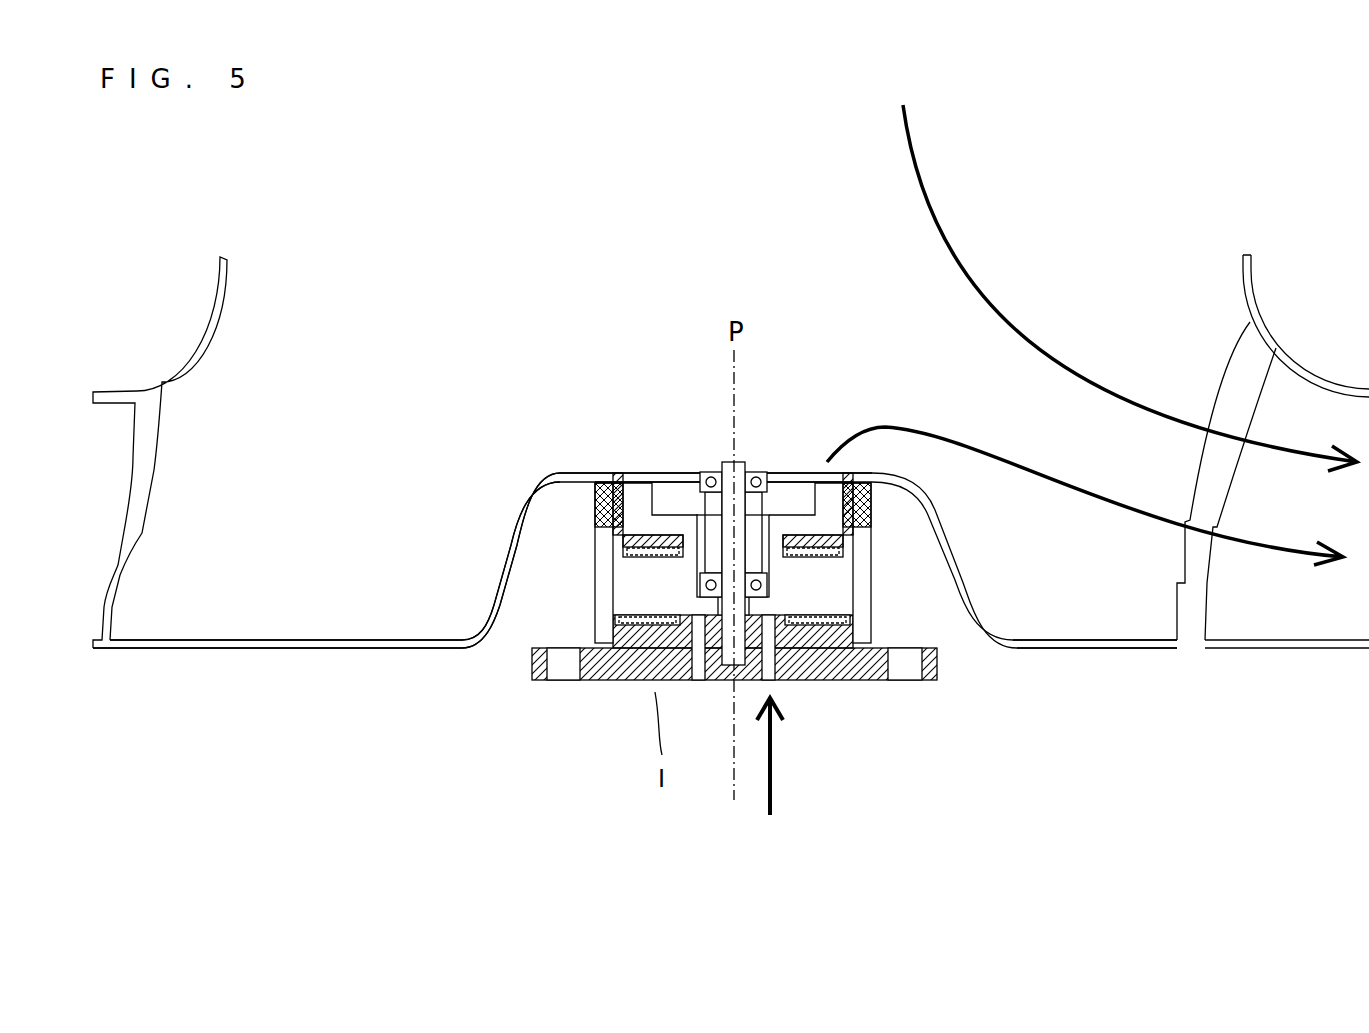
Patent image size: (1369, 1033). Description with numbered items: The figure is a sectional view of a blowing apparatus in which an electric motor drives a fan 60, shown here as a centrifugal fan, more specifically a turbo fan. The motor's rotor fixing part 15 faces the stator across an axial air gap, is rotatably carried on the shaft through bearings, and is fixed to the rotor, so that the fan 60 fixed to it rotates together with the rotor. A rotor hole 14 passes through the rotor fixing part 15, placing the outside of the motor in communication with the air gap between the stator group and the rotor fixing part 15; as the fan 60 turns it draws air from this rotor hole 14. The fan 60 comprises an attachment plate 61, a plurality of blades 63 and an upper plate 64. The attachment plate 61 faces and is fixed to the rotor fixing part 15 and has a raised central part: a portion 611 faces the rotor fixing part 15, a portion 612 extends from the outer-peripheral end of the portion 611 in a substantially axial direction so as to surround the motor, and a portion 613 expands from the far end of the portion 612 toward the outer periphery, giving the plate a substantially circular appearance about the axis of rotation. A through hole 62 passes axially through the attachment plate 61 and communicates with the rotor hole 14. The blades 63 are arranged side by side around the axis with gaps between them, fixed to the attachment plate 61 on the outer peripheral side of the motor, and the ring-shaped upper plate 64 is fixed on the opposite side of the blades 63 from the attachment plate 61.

The rotor hole 14 is at (598, 503).
The rotor fixing part 15 is at (603, 478).
The fan 60 is at (565, 462).
The attachment plate 61 is at (1130, 650).
The through hole 62 is at (637, 475).
The blades 63 is at (1198, 588).
The upper plate 64 is at (1257, 273).
The portion facing the rotor fixing part 611 is at (683, 470).
The portion extending in a substantial axial direction 612 is at (522, 522).
The portion expanding toward the outer periphery side 613 is at (328, 640).